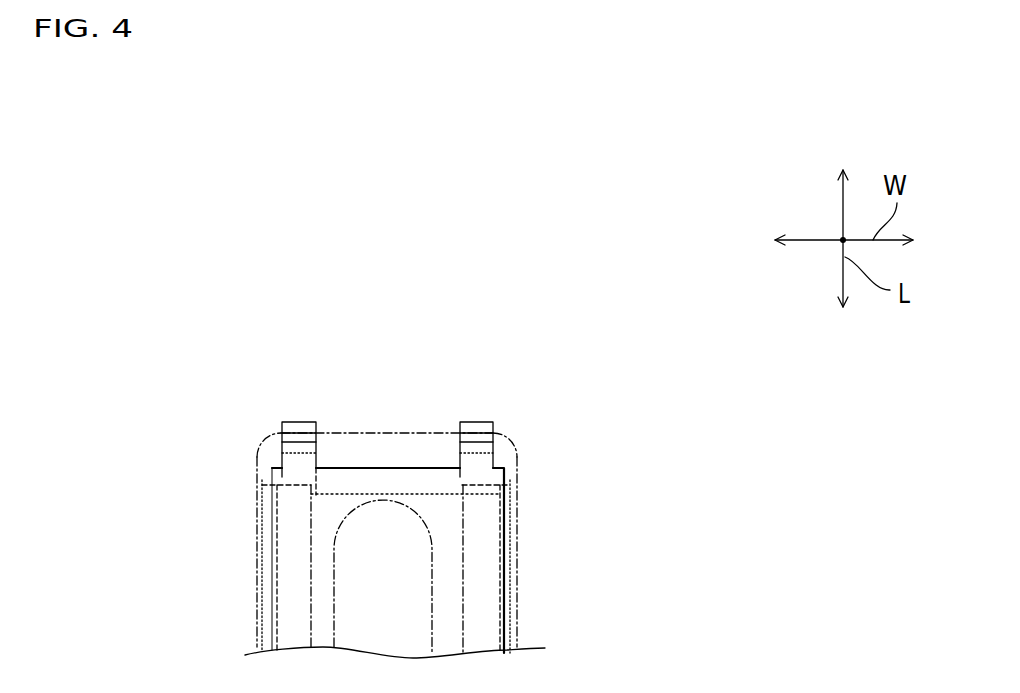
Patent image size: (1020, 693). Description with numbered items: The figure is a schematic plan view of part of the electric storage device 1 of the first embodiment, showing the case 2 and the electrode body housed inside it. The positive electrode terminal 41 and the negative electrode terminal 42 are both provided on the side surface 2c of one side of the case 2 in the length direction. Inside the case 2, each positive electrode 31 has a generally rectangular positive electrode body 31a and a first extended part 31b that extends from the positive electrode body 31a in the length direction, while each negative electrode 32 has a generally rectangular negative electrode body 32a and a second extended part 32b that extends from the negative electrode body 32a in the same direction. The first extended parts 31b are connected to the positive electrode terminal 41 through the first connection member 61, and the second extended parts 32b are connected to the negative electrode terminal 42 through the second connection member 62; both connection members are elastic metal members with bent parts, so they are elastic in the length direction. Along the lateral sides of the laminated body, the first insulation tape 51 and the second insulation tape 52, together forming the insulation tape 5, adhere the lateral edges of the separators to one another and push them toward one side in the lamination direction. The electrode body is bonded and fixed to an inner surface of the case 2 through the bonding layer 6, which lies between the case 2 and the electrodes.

The electric storage device 1 is at (452, 375).
The case 2 is at (520, 477).
The side surface 2c is at (385, 425).
The insulation tape 5 is at (512, 534).
The bonding layer 6 is at (330, 548).
The positive electrode 31 is at (272, 583).
The positive electrode body 31a is at (513, 612).
The first extended part 31b is at (280, 460).
The negative electrode 32 is at (268, 616).
The negative electrode body 32a is at (507, 640).
The second extended part 32b is at (500, 462).
The positive electrode terminal 41 is at (302, 420).
The negative electrode terminal 42 is at (475, 420).
The first insulation tape 51 is at (257, 520).
The second insulation tape 52 is at (516, 572).
The first connection member 61 is at (282, 443).
The second connection member 62 is at (493, 443).